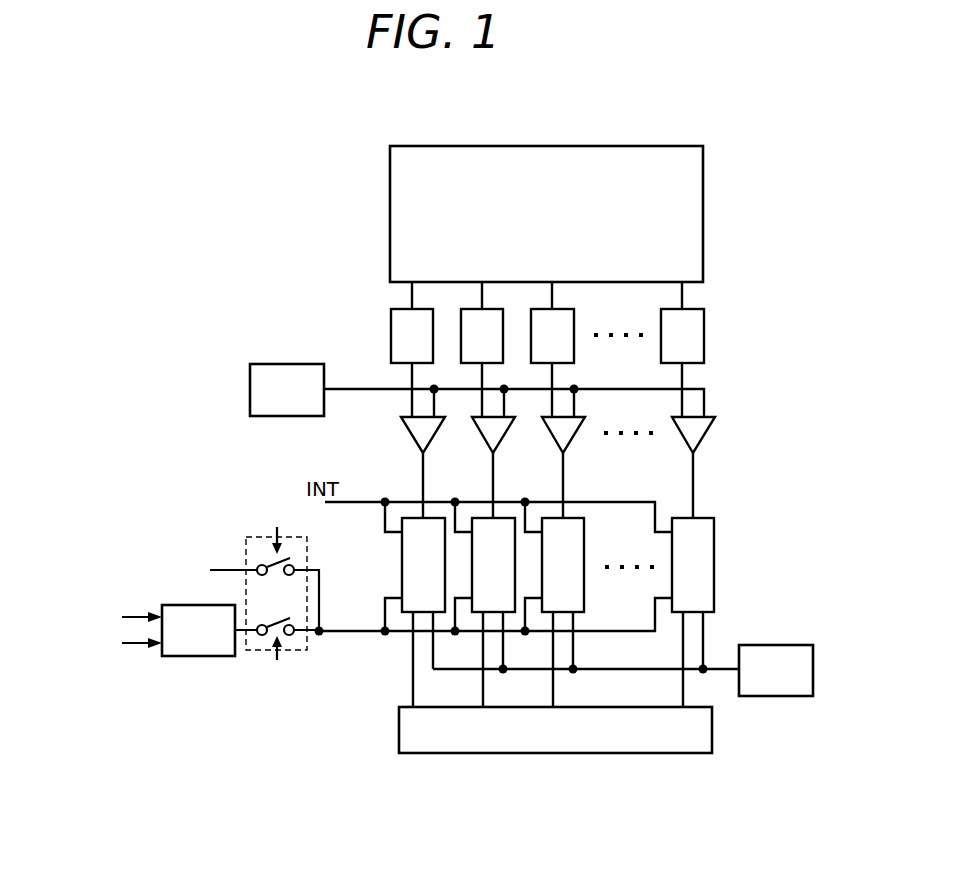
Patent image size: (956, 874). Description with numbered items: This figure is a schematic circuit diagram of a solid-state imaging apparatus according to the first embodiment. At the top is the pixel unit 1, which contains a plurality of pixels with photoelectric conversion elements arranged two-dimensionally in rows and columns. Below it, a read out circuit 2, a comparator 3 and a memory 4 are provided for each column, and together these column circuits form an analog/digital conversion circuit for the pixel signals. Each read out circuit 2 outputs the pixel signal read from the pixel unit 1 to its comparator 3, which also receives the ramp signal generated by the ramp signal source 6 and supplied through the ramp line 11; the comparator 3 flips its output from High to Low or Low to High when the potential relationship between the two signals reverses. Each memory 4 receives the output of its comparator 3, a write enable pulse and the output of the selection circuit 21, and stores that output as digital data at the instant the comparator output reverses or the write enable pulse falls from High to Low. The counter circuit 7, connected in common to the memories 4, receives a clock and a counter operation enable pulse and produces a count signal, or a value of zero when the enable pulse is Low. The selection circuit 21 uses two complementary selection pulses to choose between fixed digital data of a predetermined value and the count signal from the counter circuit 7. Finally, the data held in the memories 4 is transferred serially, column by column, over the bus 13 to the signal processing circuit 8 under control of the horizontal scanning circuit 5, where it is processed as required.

The pixel unit 1 is at (390, 210).
The read out circuit 2 is at (391, 333).
The comparator 3 is at (414, 437).
The memory 4 is at (408, 561).
The horizontal scanning circuit 5 is at (523, 745).
The ramp signal source 6 is at (287, 370).
The counter circuit 7 is at (197, 648).
The signal processing circuit 8 is at (775, 688).
The ramp line 11 is at (704, 395).
The data bus 13 is at (645, 670).
The selection circuit 21 is at (255, 537).